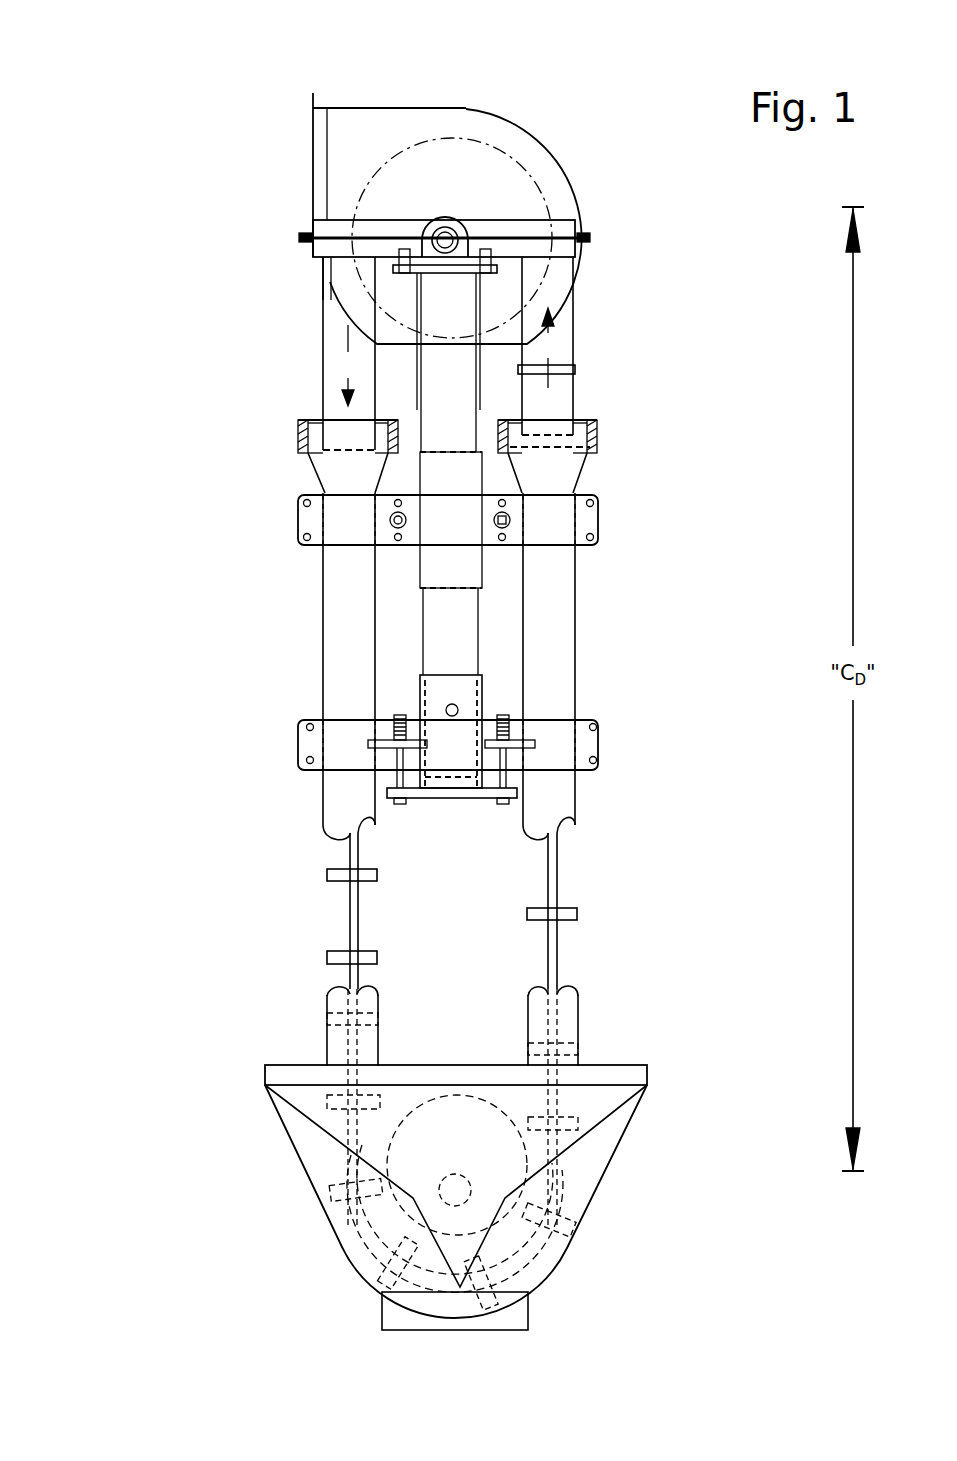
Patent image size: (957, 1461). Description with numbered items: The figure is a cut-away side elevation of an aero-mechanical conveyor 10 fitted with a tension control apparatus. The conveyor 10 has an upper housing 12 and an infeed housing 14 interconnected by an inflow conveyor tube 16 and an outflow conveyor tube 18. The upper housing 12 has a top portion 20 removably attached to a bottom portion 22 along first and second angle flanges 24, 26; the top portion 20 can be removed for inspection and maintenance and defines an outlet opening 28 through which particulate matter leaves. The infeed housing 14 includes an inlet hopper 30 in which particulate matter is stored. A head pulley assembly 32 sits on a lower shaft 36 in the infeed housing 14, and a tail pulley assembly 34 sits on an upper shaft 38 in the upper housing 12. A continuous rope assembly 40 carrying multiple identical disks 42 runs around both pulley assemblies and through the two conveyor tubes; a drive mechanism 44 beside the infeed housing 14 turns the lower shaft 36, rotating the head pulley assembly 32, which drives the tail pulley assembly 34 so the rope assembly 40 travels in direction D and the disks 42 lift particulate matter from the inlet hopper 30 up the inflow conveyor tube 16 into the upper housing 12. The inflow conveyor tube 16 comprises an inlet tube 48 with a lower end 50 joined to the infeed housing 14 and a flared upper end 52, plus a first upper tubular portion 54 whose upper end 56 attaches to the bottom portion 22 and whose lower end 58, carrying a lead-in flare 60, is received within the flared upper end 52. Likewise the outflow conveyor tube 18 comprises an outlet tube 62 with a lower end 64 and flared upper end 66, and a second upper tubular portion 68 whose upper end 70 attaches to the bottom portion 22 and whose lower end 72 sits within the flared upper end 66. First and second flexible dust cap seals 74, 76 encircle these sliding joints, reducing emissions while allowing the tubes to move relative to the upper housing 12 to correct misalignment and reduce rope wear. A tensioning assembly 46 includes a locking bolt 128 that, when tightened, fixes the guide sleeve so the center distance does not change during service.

The aero-mechanical conveyor 10 is at (117, 400).
The upper housing 12 is at (570, 162).
The infeed housing 14 is at (605, 1213).
The inflow conveyor tube 16 is at (598, 631).
The outflow conveyor tube 18 is at (310, 683).
The top portion 20 is at (465, 108).
The bottom portion 22 is at (492, 345).
The first angle flange 24 is at (592, 240).
The second angle flange 26 is at (577, 226).
The outlet opening 28 is at (313, 135).
The inlet hopper 30 is at (603, 1120).
The head pulley assembly 32 is at (351, 1155).
The tail pulley assembly 34 is at (431, 118).
The lower shaft 36 is at (341, 1223).
The upper shaft 38 is at (451, 228).
The continuous rope assembly 40 is at (348, 843).
The disks 42 is at (327, 958).
The drive mechanism 44 is at (528, 1310).
The tensioning assembly 46 is at (500, 681).
The inlet tube 48 is at (576, 595).
The lower end 50 is at (578, 1050).
The flared upper end 52 is at (590, 470).
The first upper tubular portion 54 is at (576, 375).
The upper end 56 is at (575, 292).
The lower end 58 is at (598, 442).
The lead-in flare 60 is at (560, 470).
The outlet tube 62 is at (325, 634).
The lower end 64 is at (327, 1038).
The flared upper end 66 is at (319, 485).
The second upper tubular portion 68 is at (323, 350).
The upper end 70 is at (315, 282).
The lower end 72 is at (318, 476).
The first flexible dust cap seal 74 is at (598, 424).
The second flexible dust cap seal 76 is at (298, 436).
The locking bolt 128 is at (458, 710).